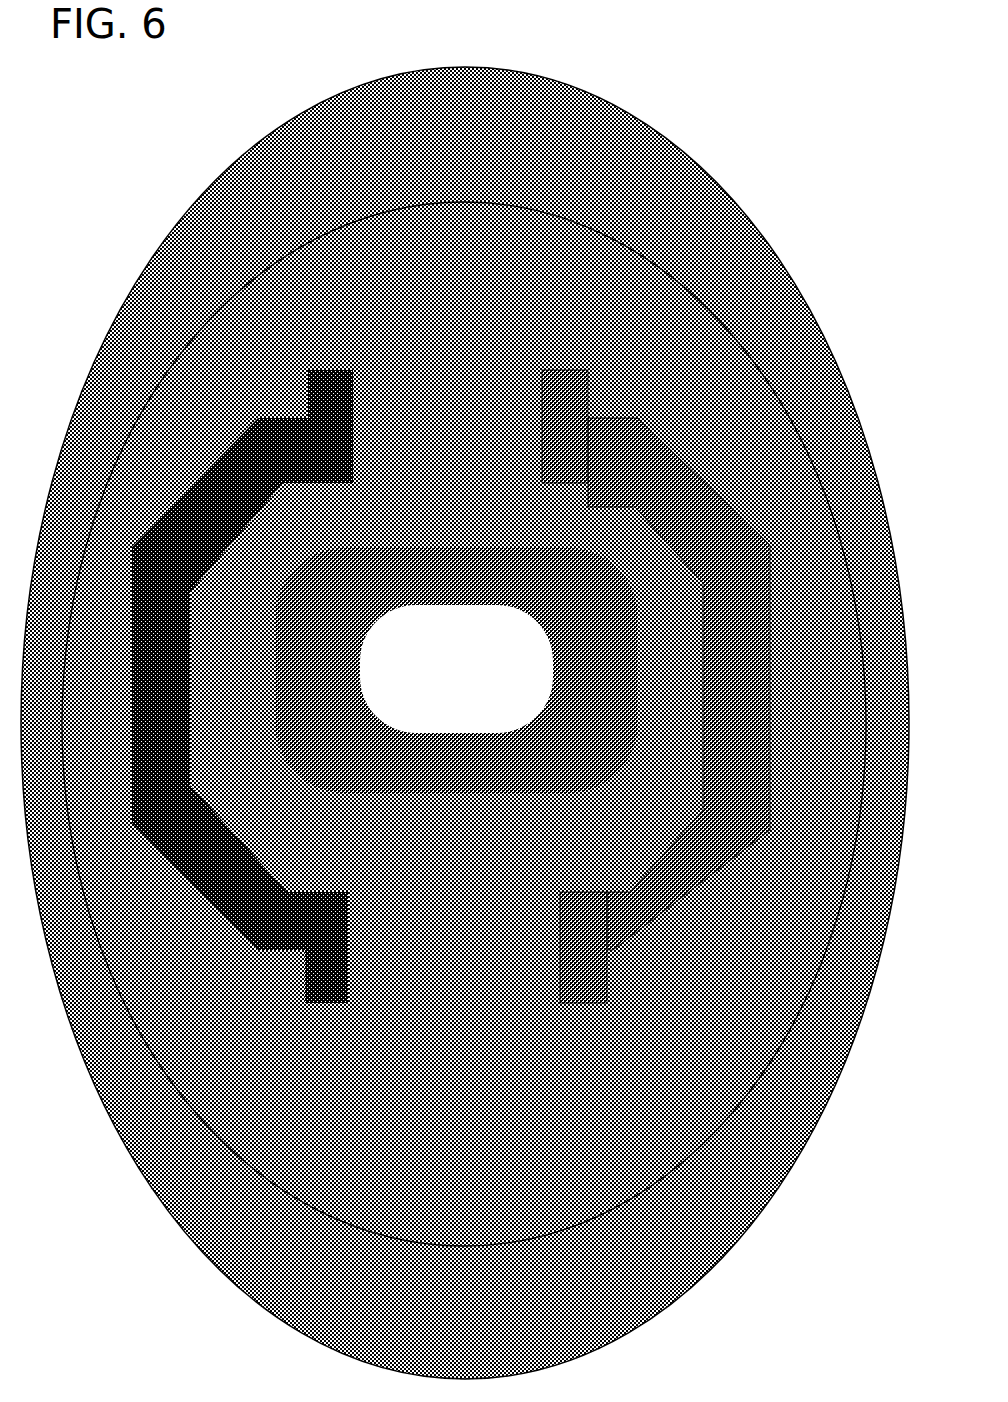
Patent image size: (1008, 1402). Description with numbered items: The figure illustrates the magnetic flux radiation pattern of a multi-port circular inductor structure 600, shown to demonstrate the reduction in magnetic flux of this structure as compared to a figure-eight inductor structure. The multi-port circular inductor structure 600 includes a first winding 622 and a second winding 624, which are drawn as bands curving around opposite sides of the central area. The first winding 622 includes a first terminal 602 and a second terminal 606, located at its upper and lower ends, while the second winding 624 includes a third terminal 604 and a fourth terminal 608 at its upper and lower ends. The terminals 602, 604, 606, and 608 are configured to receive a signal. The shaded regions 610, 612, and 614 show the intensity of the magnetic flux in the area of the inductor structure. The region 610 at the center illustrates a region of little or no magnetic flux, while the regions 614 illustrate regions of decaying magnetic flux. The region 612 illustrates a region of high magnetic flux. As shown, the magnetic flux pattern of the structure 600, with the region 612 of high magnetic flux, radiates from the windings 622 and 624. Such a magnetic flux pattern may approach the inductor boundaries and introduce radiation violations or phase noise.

The multi-port circular inductor structure 600 is at (742, 90).
The first terminal 602 is at (353, 370).
The third terminal 604 is at (542, 370).
The second terminal 606 is at (348, 1003).
The fourth terminal 608 is at (561, 1003).
The region of little or no magnetic flux 610 is at (456, 669).
The region of high magnetic flux 612 is at (451, 681).
The regions of decaying magnetic flux 614 is at (464, 704).
The first winding 622 is at (190, 705).
The second winding 624 is at (706, 705).